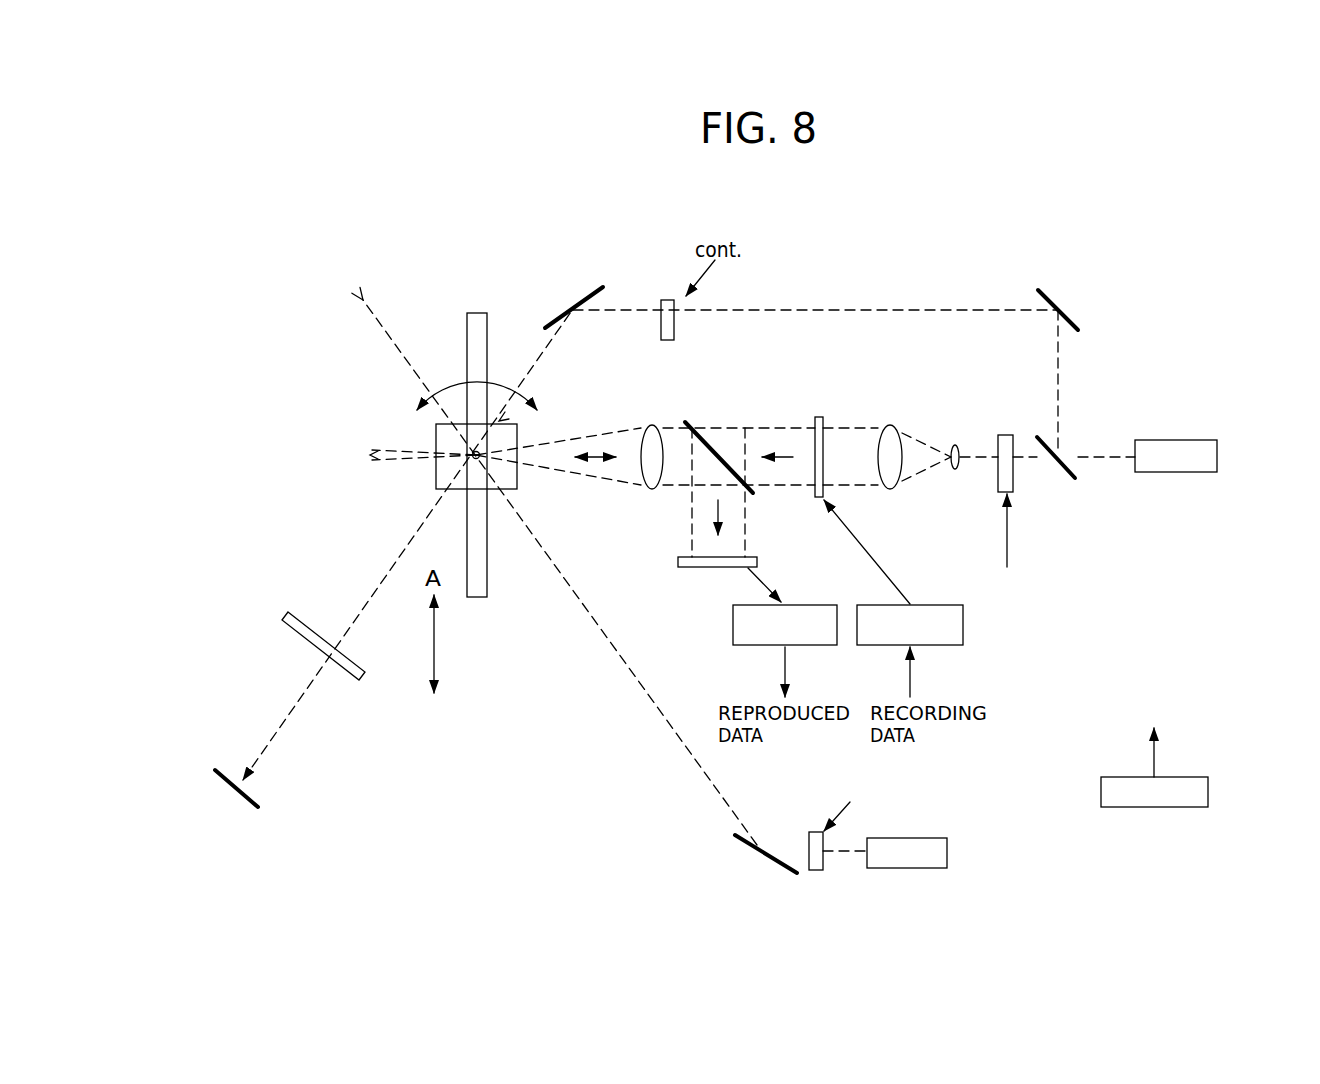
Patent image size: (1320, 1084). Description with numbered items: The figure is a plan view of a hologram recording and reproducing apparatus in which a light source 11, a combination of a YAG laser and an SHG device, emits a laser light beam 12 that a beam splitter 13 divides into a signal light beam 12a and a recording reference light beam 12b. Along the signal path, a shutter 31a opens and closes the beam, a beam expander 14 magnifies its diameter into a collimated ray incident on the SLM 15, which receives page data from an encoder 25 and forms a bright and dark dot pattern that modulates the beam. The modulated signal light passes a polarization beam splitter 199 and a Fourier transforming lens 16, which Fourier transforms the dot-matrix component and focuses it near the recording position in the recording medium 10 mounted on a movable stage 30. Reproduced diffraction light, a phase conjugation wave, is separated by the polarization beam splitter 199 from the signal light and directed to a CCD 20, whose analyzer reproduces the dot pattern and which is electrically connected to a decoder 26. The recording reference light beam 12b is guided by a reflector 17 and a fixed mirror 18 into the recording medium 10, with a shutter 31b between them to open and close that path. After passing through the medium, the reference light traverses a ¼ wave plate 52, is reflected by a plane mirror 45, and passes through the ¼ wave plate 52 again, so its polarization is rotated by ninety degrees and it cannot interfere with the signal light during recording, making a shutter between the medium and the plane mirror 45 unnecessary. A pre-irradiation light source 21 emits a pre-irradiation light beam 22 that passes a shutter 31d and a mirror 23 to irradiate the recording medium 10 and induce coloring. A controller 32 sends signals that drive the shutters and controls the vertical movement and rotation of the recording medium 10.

The recording medium 10 is at (478, 325).
The movable stage 30 is at (519, 480).
The fixed mirror 18 is at (580, 302).
The shutter 31b is at (674, 325).
The mirror 17 is at (1067, 313).
The recording reference light beam 12b is at (1058, 383).
The Fourier transforming lens 16 is at (652, 428).
The polarization beam splitter 199 is at (720, 447).
The SLM 15 is at (820, 417).
The beam expander 14 is at (922, 463).
The shutter 31a is at (1010, 435).
The beam splitter 13 is at (1062, 473).
The signal light beam 12a is at (1043, 457).
The laser light beam 12 is at (1107, 457).
The light source 11 is at (1180, 473).
The CCD 20 is at (678, 562).
The decoder 26 is at (733, 622).
The encoder 25 is at (937, 605).
The mirror 23 is at (747, 845).
The shutter 31d is at (807, 842).
The pre-irradiation light beam 22 is at (848, 851).
The pre-irradiation light source 21 is at (947, 851).
The controller 32 is at (1180, 807).
The ¼ wave plate 52 is at (287, 630).
The plane mirror 45 is at (225, 783).